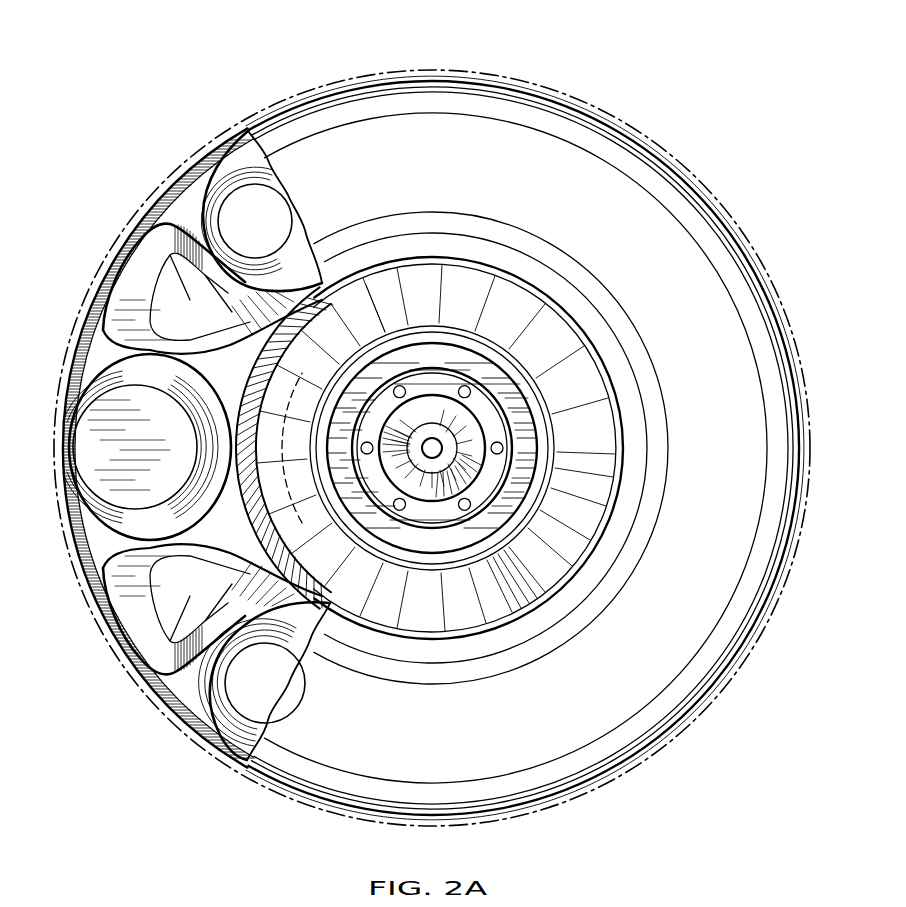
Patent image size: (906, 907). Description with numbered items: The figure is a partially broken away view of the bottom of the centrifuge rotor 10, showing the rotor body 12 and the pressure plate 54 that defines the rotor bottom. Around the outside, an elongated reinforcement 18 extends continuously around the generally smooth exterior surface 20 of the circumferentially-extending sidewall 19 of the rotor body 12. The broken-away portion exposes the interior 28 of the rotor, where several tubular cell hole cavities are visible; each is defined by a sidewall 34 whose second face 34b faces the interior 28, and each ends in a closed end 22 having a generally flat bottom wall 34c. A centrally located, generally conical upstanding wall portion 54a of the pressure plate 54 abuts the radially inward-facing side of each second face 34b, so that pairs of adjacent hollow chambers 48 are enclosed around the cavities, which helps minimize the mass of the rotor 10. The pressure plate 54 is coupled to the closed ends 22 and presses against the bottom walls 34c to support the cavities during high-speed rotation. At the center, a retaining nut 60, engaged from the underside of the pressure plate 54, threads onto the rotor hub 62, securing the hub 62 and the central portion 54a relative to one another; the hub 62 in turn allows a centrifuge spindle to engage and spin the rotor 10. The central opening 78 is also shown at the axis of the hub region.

The centrifuge rotor 10 is at (714, 65).
The rotor body 12 is at (490, 80).
The elongated reinforcement 18 is at (684, 170).
The sidewall 19 is at (176, 190).
The exterior surface 20 is at (324, 85).
The closed end 22 is at (276, 190).
The interior 28 is at (130, 675).
The sidewall 34 is at (238, 188).
The second face 34b is at (178, 302).
The bottom wall 34c is at (268, 228).
The hollow chamber 48 is at (158, 250).
The pressure plate 54 is at (448, 170).
The conical upstanding wall portion 54a is at (330, 600).
The retaining nut 60 is at (530, 432).
The rotor hub 62 is at (497, 472).
The center bore 78 is at (440, 447).